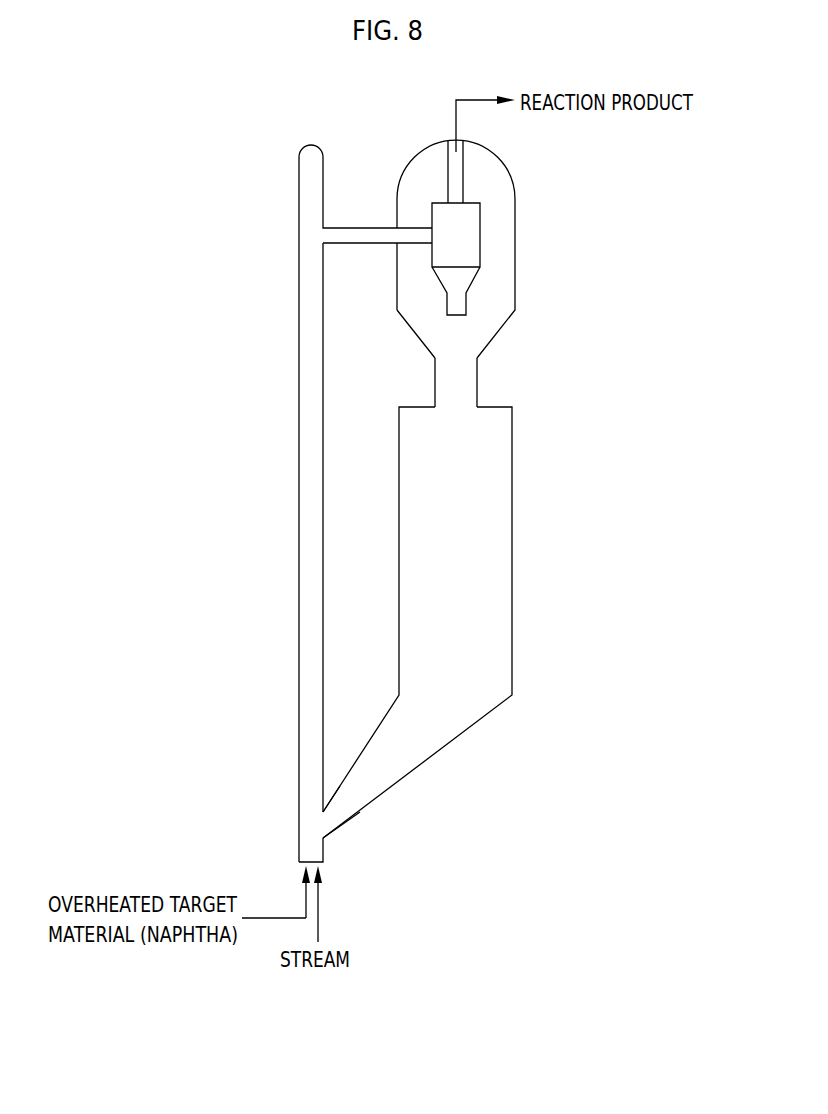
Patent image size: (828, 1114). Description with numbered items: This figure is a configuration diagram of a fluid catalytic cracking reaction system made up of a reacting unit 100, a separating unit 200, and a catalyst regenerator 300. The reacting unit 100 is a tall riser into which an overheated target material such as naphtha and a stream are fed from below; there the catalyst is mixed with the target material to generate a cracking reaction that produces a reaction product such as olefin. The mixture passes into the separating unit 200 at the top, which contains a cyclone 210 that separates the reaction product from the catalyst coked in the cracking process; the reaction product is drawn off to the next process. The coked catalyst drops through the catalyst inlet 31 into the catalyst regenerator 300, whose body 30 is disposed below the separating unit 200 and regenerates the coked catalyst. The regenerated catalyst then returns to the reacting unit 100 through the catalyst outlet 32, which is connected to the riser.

The reacting unit 100 is at (282, 480).
The separating unit 200 is at (533, 275).
The cyclone 210 is at (480, 233).
The catalyst regenerator 300 is at (457, 622).
The catalyst regenerator body 30 is at (513, 580).
The catalyst inlet 31 is at (455, 408).
The catalyst outlet 32 is at (322, 823).